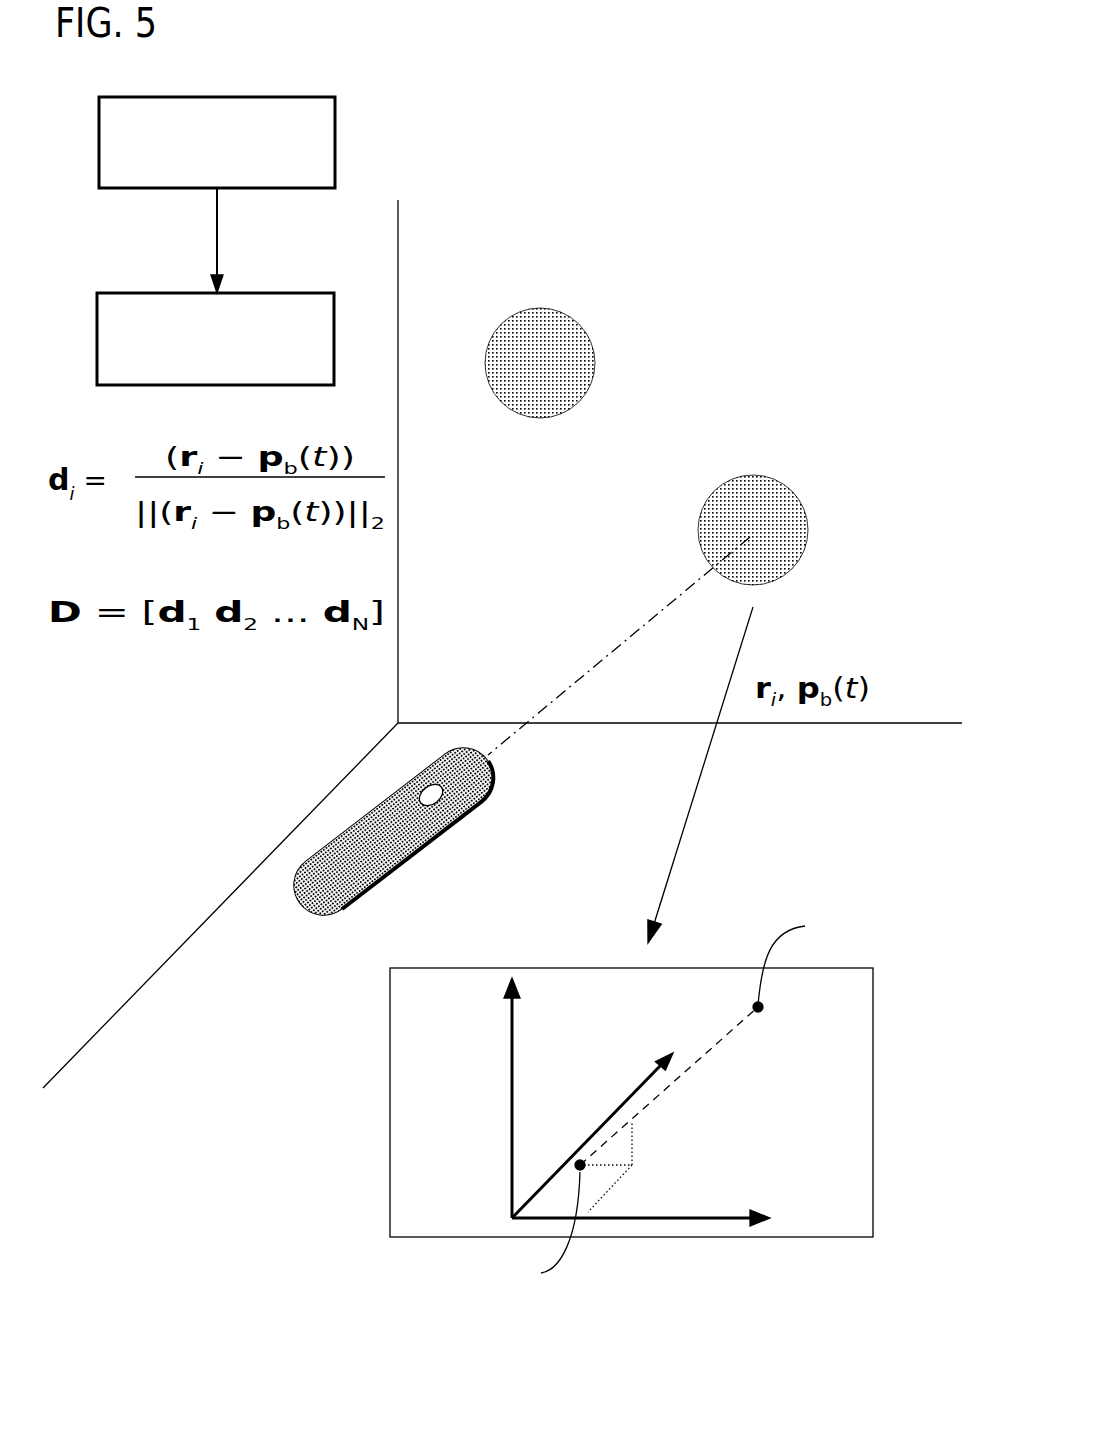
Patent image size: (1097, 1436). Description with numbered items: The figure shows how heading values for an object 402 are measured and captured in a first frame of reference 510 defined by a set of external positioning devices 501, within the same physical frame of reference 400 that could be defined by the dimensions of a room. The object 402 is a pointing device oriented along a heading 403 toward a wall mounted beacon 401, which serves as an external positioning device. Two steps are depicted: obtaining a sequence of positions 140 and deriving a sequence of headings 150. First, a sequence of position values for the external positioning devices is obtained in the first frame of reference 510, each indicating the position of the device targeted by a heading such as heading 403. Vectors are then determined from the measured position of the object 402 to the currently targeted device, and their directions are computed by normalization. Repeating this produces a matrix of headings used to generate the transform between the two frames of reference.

The step of obtaining a sequence of positions 140 is at (217, 142).
The step of obtaining a sequence of headings 150 is at (215, 339).
The physical frame of reference 400 is at (398, 320).
The wall mounted beacon 401 is at (807, 528).
The object 402 is at (418, 855).
The heading 403 is at (619, 646).
The external positioning devices 501 is at (753, 470).
The first frame of reference 510 is at (455, 1001).